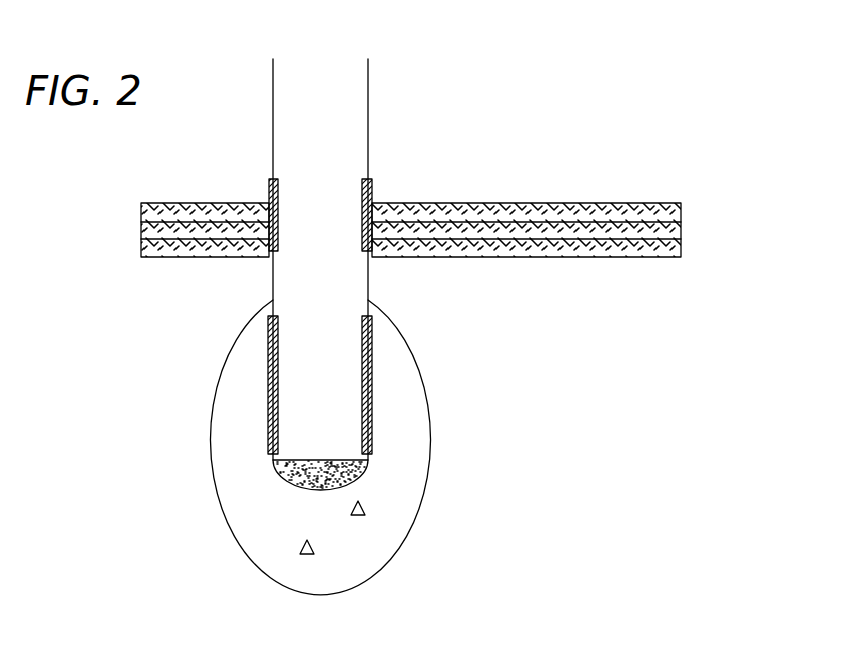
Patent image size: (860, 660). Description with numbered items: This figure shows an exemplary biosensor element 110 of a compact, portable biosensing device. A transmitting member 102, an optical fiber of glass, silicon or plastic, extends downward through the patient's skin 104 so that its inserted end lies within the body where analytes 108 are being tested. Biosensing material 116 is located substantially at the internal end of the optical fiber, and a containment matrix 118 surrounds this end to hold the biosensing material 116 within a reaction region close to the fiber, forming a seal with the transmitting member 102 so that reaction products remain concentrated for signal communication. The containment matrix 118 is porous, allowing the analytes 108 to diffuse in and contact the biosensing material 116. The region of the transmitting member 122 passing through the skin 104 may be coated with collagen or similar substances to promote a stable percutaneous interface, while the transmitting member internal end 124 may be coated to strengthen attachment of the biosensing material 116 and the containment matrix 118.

The transmitting member 102 is at (373, 113).
The patient's skin 104 is at (602, 210).
The analytes 108 is at (347, 545).
The biosensor element 110 is at (604, 404).
The biosensing material 116 is at (358, 472).
The containment matrix 118 is at (211, 442).
The region of the transmitting member passing through the skin 122 is at (269, 187).
The transmitting member internal end 124 is at (268, 374).